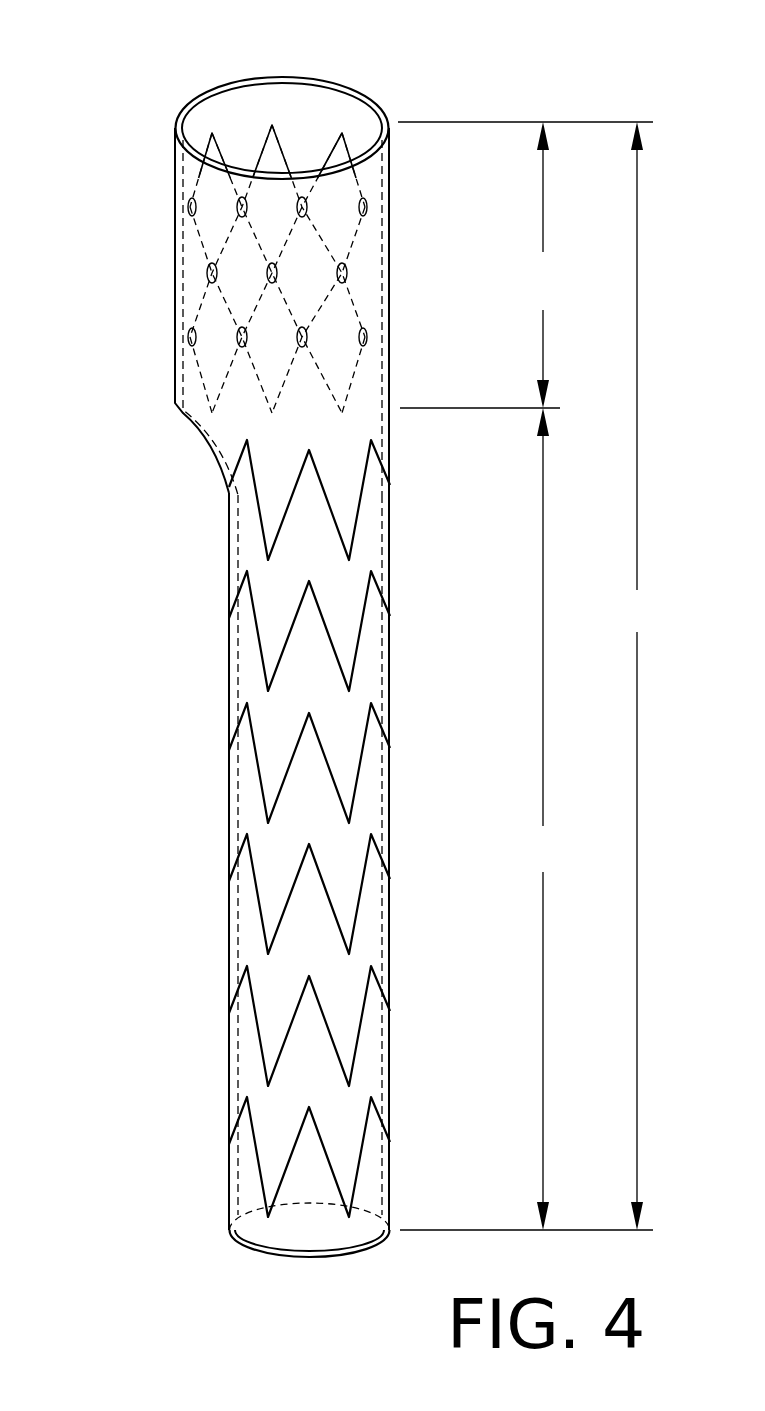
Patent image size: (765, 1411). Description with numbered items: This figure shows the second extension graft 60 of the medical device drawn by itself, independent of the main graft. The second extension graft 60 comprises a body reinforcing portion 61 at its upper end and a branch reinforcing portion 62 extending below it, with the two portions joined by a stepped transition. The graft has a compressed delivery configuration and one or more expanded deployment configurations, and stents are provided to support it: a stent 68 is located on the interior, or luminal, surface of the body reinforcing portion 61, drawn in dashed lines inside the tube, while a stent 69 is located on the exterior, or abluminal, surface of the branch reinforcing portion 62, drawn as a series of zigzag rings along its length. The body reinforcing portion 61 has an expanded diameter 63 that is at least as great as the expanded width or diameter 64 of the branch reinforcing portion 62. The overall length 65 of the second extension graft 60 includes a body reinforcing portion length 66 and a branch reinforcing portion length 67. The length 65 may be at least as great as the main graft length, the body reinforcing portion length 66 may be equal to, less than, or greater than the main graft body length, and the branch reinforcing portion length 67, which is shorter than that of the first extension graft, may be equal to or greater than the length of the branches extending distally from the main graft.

The second extension graft 60 is at (398, 662).
The body reinforcing portion 61 is at (163, 128).
The branch reinforcing portion 62 is at (222, 1238).
The expanded diameter 63 is at (388, 110).
The expanded width or diameter 64 is at (391, 1250).
The length 65 is at (637, 676).
The body reinforcing portion length 66 is at (542, 265).
The branch reinforcing portion length 67 is at (542, 819).
The stent 68 is at (350, 290).
The stent 69 is at (360, 766).